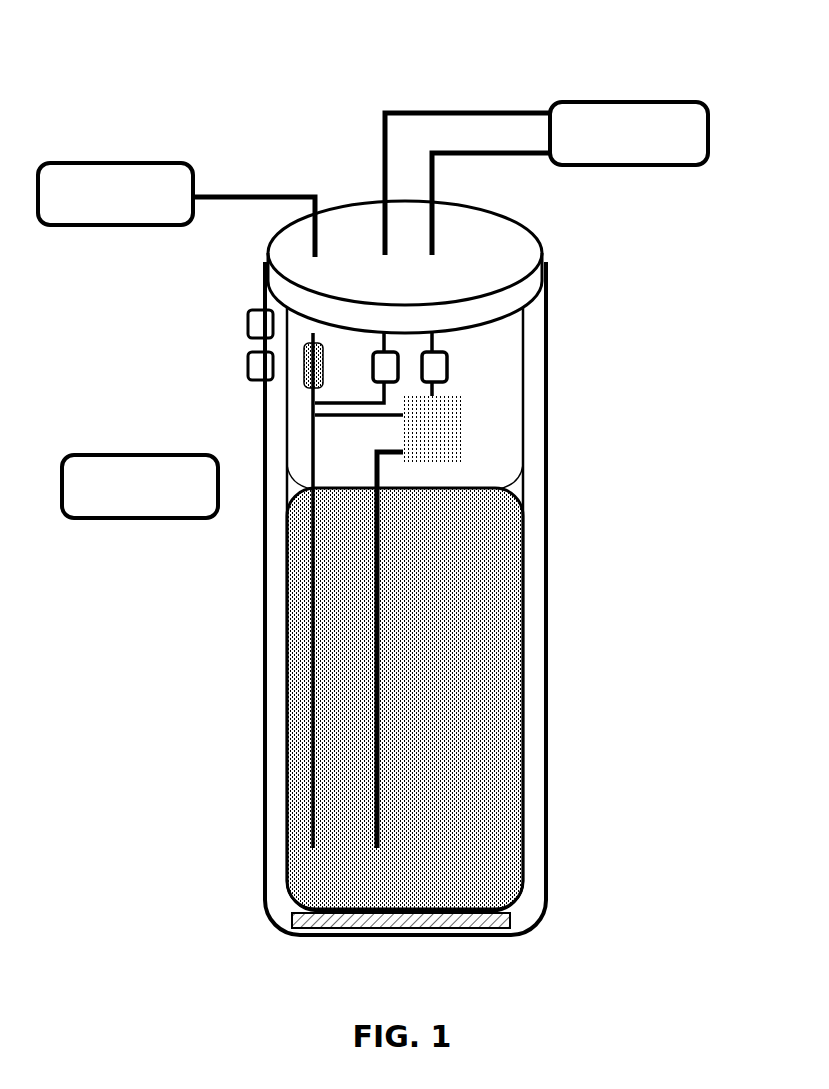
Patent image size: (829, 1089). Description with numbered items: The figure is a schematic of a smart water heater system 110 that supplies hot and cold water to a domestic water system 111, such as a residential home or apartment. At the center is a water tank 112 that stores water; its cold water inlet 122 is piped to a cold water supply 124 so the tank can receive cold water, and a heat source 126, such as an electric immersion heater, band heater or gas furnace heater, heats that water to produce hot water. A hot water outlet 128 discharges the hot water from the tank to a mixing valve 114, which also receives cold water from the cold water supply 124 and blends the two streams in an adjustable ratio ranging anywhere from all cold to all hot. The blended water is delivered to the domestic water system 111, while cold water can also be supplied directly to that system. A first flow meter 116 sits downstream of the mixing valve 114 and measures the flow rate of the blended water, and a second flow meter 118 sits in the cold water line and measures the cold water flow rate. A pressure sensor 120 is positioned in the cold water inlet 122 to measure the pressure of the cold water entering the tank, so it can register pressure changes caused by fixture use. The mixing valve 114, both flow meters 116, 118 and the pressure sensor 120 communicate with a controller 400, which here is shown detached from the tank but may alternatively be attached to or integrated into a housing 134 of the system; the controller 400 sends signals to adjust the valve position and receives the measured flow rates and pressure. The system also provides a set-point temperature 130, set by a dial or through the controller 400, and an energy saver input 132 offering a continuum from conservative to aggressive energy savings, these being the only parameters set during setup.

The smart water heater system 110 is at (322, 150).
The domestic water system 111 is at (546, 178).
The water tank 112 is at (523, 550).
The mixing valve 114 is at (462, 422).
The first flow meter 116 is at (447, 365).
The second flow meter 118 is at (398, 352).
The pressure sensor 120 is at (306, 343).
The cold water inlet 122 is at (248, 192).
The cold water supply 124 is at (115, 194).
The heat source 126 is at (512, 918).
The hot water outlet 128 is at (380, 481).
The set-point temperature 130 is at (248, 322).
The energy saver input 132 is at (248, 373).
The housing 134 is at (535, 612).
The controller 400 is at (140, 486).